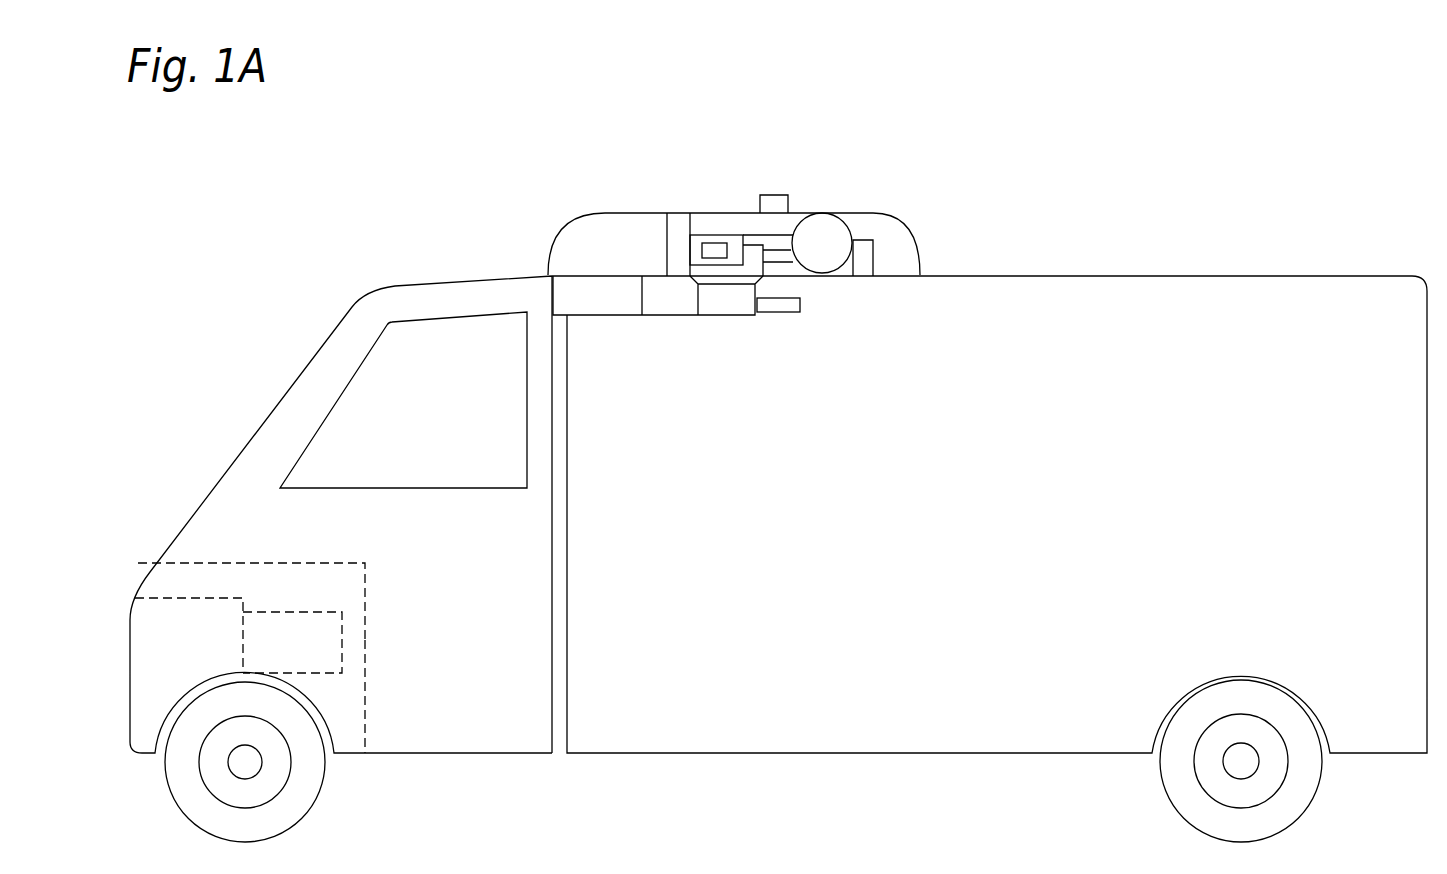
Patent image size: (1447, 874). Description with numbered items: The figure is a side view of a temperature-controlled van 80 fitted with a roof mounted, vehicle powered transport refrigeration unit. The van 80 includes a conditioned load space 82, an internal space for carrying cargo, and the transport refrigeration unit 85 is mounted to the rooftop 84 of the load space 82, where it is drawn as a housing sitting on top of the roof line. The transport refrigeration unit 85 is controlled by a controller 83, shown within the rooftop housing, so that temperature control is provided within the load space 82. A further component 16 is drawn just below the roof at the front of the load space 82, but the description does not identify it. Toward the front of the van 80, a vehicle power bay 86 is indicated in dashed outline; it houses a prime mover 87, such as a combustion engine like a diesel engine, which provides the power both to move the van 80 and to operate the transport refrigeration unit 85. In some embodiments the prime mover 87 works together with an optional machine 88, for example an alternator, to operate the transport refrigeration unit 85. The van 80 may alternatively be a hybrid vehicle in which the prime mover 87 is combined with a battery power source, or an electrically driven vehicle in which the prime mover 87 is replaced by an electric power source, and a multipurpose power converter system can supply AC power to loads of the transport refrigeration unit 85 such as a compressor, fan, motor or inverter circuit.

The temperature-controlled van 80 is at (284, 302).
The conditioned load space 82 is at (1292, 310).
The rooftop 84 is at (1107, 276).
The transport refrigeration unit 85 is at (893, 230).
The controller 83 is at (712, 245).
The sensor unit 16 is at (653, 290).
The vehicle power bay 86 is at (198, 562).
The prime mover 87 is at (165, 598).
The machine 88 is at (343, 657).